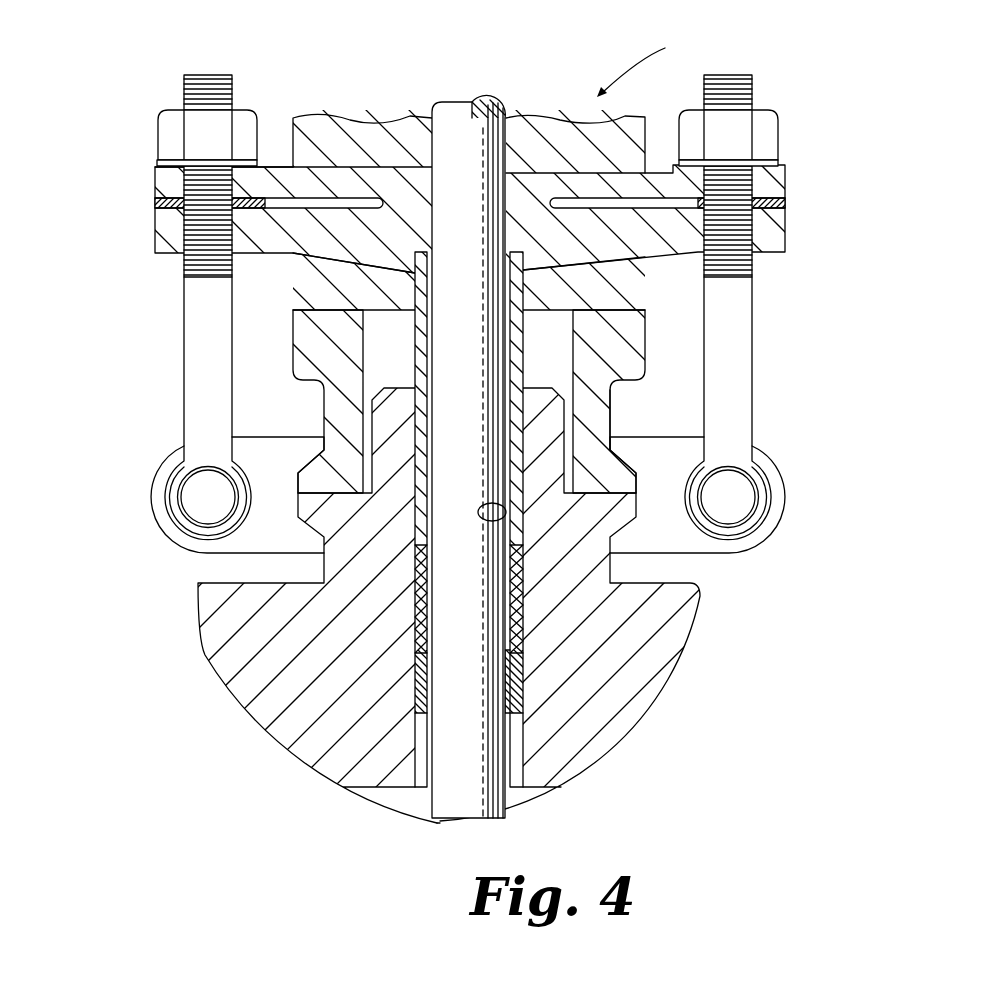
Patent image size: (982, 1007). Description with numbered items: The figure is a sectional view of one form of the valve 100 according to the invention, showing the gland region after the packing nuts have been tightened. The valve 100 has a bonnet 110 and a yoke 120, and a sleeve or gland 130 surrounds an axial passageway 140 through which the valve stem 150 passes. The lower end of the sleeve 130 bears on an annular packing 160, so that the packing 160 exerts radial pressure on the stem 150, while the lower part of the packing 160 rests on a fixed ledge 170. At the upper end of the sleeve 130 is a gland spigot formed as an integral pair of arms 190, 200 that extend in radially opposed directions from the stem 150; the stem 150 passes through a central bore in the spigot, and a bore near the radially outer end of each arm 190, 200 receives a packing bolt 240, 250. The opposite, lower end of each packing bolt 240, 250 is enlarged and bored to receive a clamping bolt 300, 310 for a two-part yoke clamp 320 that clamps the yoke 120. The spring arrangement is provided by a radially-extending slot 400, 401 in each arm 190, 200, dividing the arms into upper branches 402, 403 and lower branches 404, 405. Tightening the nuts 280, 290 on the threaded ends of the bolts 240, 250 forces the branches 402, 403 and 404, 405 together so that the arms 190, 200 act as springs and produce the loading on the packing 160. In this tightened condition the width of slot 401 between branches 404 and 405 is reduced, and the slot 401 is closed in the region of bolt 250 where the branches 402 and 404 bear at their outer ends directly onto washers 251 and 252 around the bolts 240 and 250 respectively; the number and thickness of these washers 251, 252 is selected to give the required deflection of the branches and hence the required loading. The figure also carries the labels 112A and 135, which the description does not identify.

The valve 100 is at (652, 56).
The bonnet 110 is at (613, 740).
The clamping surface 112A is at (578, 428).
The yoke 120 is at (632, 326).
The sleeve or gland 130 is at (230, 693).
The loop portion 135 is at (497, 512).
The axial passageway 140 is at (480, 518).
The valve stem 150 is at (443, 793).
The annular packing 160 is at (523, 612).
The fixed ledge 170 is at (517, 677).
The arm 190 is at (644, 220).
The arm 200 is at (295, 220).
The packing bolt 240 is at (748, 322).
The packing bolt 250 is at (200, 384).
The washer 251 is at (780, 203).
The washer 252 is at (165, 203).
The nut 280 is at (765, 125).
The nut 290 is at (172, 125).
The clamping bolt 300 is at (738, 495).
The clamping bolt 310 is at (200, 510).
The two-part yoke clamp 320 is at (266, 547).
The radially-extending slot 400 is at (590, 195).
The radially-extending slot 401 is at (345, 200).
The upper branch 402 is at (775, 185).
The upper branch 403 is at (680, 240).
The lower branch 404 is at (278, 183).
The lower branch 405 is at (290, 250).